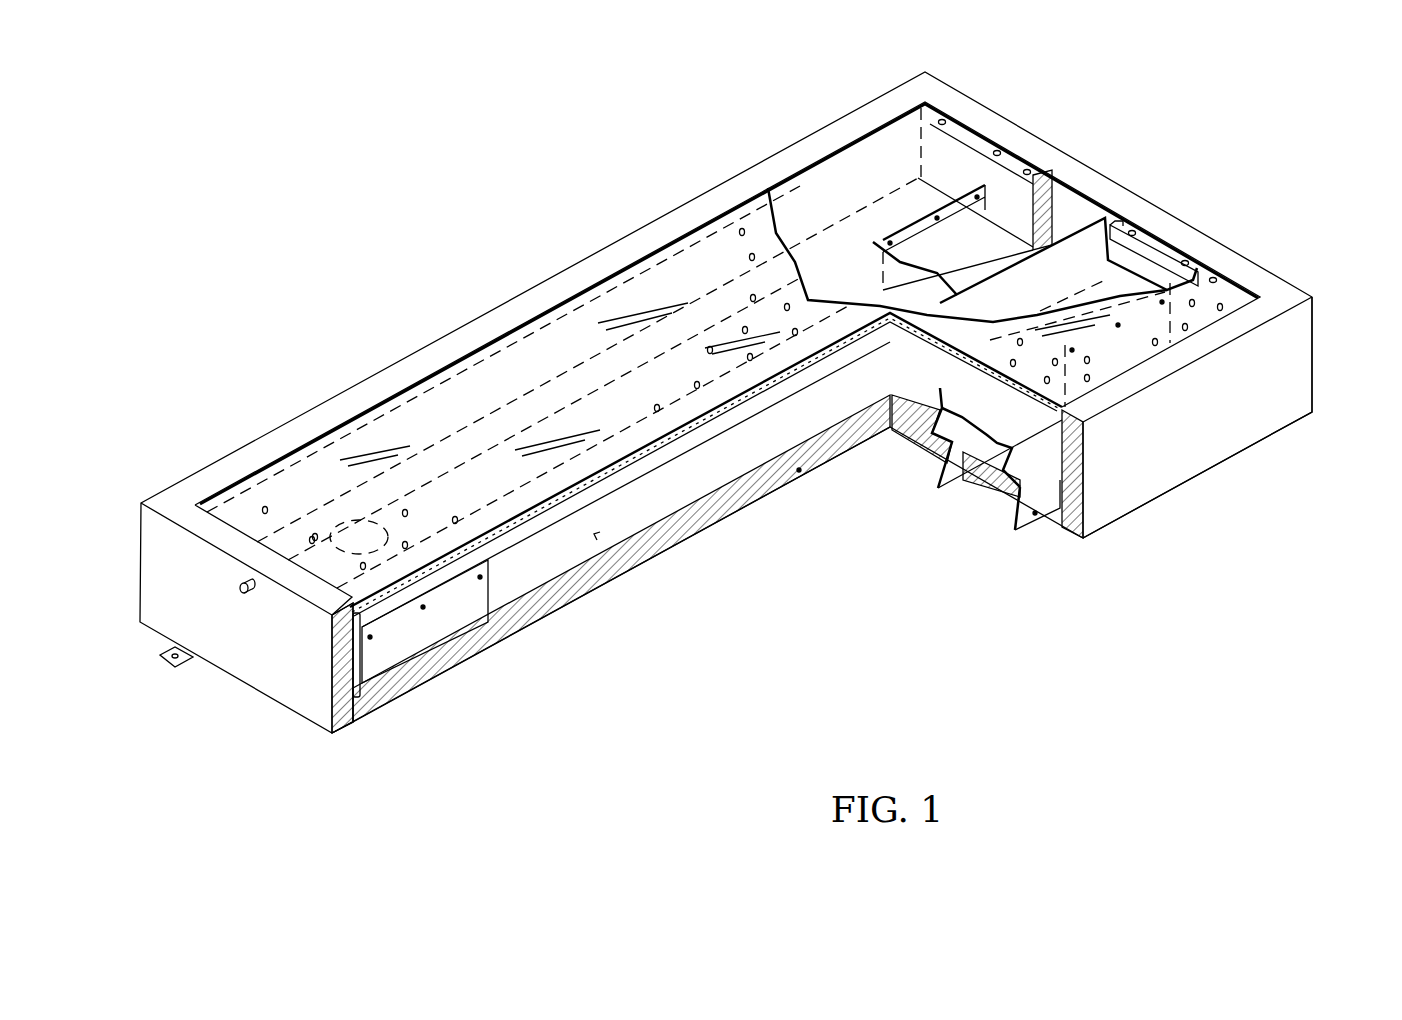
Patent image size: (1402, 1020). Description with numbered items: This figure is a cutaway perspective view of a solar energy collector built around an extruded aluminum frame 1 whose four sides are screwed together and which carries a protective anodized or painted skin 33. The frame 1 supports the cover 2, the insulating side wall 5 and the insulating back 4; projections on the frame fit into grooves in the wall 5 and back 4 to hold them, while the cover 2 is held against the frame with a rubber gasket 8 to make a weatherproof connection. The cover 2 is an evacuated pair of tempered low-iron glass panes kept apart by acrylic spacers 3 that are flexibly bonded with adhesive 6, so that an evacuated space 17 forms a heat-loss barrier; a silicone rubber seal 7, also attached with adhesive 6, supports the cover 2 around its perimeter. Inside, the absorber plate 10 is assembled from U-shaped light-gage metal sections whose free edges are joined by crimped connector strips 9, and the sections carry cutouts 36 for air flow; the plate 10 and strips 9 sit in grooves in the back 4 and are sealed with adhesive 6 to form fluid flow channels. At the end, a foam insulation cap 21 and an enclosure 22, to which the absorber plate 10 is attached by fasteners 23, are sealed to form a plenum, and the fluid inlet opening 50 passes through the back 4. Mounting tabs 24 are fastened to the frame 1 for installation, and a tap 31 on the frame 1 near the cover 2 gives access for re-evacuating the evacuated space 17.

The frame 1 is at (1245, 415).
The cover 2 is at (540, 373).
The acrylic spacers 3 is at (1089, 381).
The back 4 is at (538, 615).
The wall 5 is at (1017, 523).
The adhesive 6 is at (615, 258).
The seal 7 is at (938, 488).
The rubber gasket 8 is at (333, 632).
The connector strips 9 is at (800, 473).
The absorber plate 10 is at (597, 540).
The evacuated space 17 is at (640, 480).
The cap 21 is at (957, 222).
The enclosure 22 is at (1148, 247).
The fasteners 23 is at (997, 151).
The tabs 24 is at (157, 657).
The tap 31 is at (245, 598).
The skin 33 is at (1288, 378).
The cutouts 36 is at (443, 627).
The fluid inlet opening 50 is at (345, 520).